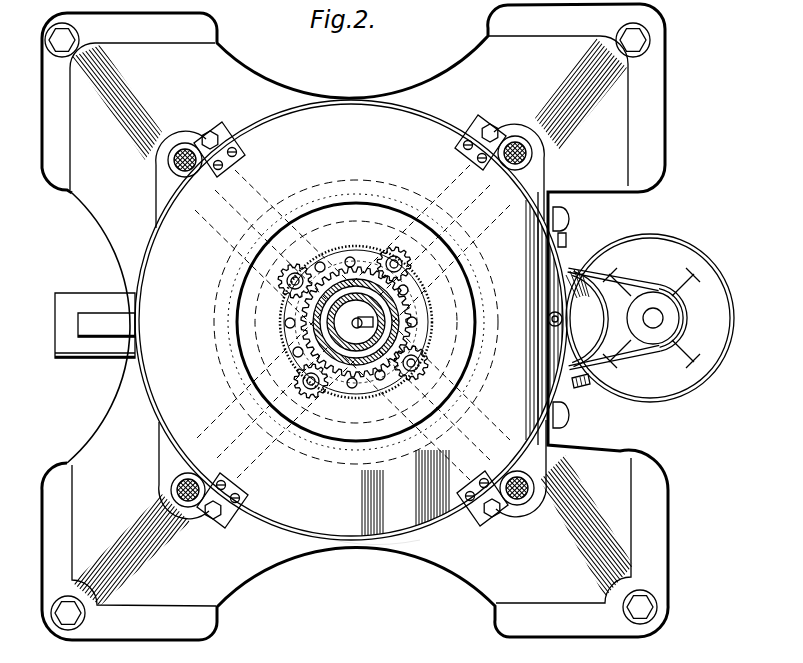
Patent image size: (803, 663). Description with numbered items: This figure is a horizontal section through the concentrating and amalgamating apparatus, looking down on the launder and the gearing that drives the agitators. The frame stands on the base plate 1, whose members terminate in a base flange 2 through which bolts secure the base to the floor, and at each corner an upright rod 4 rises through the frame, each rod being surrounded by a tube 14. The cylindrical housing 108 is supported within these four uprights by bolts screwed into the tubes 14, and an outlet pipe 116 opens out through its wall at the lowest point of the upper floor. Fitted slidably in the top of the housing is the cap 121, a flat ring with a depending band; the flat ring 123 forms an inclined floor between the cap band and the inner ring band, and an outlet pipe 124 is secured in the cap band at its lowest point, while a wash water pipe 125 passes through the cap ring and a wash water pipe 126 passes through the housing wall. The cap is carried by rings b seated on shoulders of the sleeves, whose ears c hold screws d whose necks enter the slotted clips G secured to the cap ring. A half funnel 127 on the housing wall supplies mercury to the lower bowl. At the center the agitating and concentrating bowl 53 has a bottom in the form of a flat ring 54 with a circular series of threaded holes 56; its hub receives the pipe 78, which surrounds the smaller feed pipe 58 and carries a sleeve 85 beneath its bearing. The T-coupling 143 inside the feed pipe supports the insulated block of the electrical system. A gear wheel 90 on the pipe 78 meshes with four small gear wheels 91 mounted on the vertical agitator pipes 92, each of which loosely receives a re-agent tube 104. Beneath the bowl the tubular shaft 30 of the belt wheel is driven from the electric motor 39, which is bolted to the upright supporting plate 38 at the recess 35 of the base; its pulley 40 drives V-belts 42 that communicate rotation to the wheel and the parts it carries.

The base flange 2 is at (50, 527).
The base plate 1 is at (163, 452).
The rod 4 is at (187, 144).
The tube 14 is at (172, 169).
The ring b is at (185, 179).
The ear c is at (235, 144).
The screw d is at (226, 131).
The clip G is at (245, 156).
The cap 121 is at (351, 320).
The supporting plate 38 is at (565, 212).
The electric motor 39 is at (709, 263).
The V-belts 42 is at (618, 278).
The pulley 40 is at (665, 320).
The outlet pipe 116 is at (66, 297).
The outlet pipe 124 is at (105, 332).
The agitating and concentrating bowl 53 is at (247, 316).
The flat ring 54 is at (341, 260).
The pipe 78 is at (309, 308).
The threaded holes 56 is at (295, 350).
The small gear wheel 91 is at (297, 270).
The agitator pipe 92 is at (395, 258).
The tube 104 is at (403, 264).
The gear wheel 90 is at (406, 306).
The sleeve 85 is at (394, 333).
The T-coupling 143 is at (355, 316).
The feed pipe 58 is at (355, 321).
The wash water pipe 125 is at (547, 319).
The half funnel 127 is at (587, 318).
The wash water pipe 126 is at (586, 389).
The recess 35 is at (611, 441).
The cylindrical housing 108 is at (410, 540).
The flat ring 123 is at (397, 655).
The tubular shaft 30 is at (470, 649).